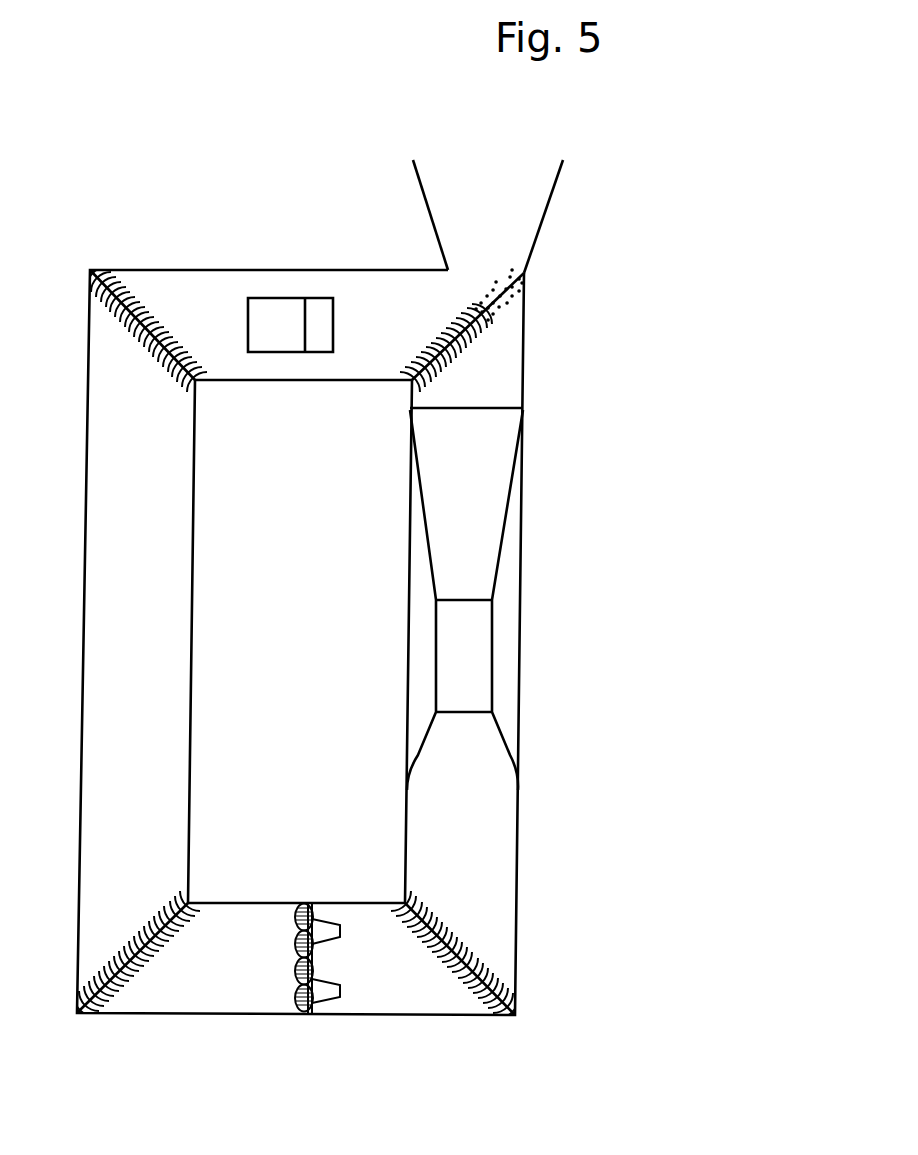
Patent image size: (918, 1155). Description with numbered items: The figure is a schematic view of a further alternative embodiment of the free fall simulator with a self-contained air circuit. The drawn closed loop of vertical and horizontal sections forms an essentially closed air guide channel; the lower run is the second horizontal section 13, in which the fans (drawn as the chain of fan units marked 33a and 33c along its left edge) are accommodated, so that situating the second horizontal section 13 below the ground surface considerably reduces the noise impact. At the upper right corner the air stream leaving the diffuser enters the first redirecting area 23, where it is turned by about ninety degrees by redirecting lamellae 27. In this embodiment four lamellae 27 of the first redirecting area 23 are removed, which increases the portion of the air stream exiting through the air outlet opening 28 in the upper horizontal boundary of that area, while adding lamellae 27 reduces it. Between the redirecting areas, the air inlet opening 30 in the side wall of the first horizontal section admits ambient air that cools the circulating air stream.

The second horizontal section 13 is at (350, 1027).
The first redirecting area 23 is at (515, 323).
The redirecting lamellae 27 is at (478, 340).
The air outlet opening 28 is at (483, 277).
The air inlet opening 30 is at (323, 335).
The hinge chain 33a is at (327, 912).
The hinge tabs 33c is at (325, 1003).